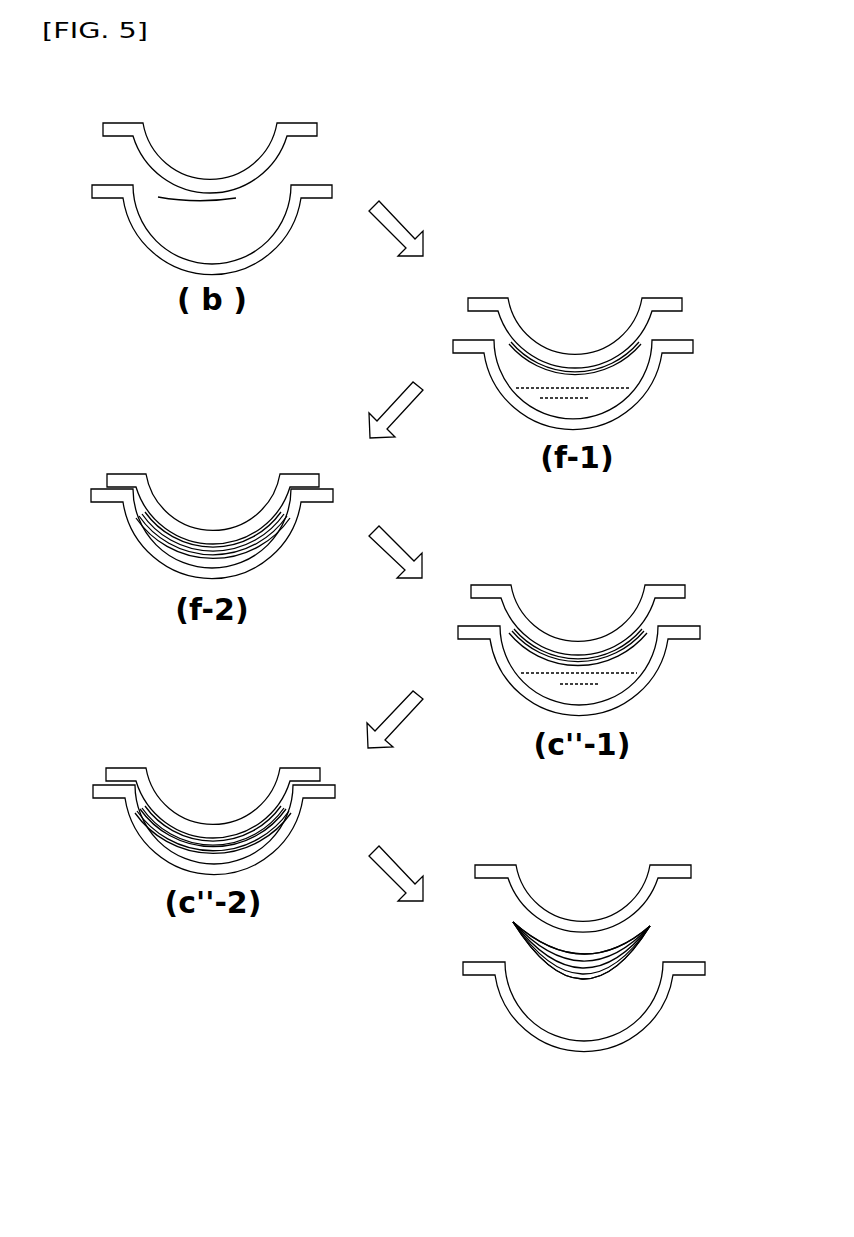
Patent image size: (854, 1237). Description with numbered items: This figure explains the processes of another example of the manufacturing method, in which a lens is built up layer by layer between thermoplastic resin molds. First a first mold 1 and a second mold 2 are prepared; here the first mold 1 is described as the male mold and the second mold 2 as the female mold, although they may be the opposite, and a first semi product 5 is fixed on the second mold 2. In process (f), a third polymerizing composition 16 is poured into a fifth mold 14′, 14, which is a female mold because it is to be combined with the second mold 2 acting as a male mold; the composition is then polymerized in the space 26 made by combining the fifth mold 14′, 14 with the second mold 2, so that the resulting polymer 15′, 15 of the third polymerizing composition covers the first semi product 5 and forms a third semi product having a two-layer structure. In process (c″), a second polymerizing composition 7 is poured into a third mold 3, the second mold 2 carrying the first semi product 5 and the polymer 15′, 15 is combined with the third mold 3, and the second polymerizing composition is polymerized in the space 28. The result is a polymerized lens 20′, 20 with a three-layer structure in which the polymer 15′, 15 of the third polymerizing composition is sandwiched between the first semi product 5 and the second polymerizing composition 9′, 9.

The first mold 1 is at (140, 240).
The second mold 2 is at (175, 174).
The third mold 3 is at (649, 686).
The first semi product 5 is at (175, 196).
The second polymerizing composition 7 is at (556, 684).
The second polymerizing composition 9′ is at (604, 953).
The lens body layer 9 is at (589, 981).
The fifth mold 14′ is at (392, 486).
The mold with cured material 14 is at (648, 396).
The polymer of the third polymerizing composition 15′ is at (422, 747).
The intermediate cured layer 15 is at (608, 654).
The third polymerizing composition 16 is at (559, 400).
The polymerized lens 20′ is at (640, 930).
The laminated lens 20 is at (707, 881).
The space 26 is at (189, 553).
The space 28 is at (204, 853).